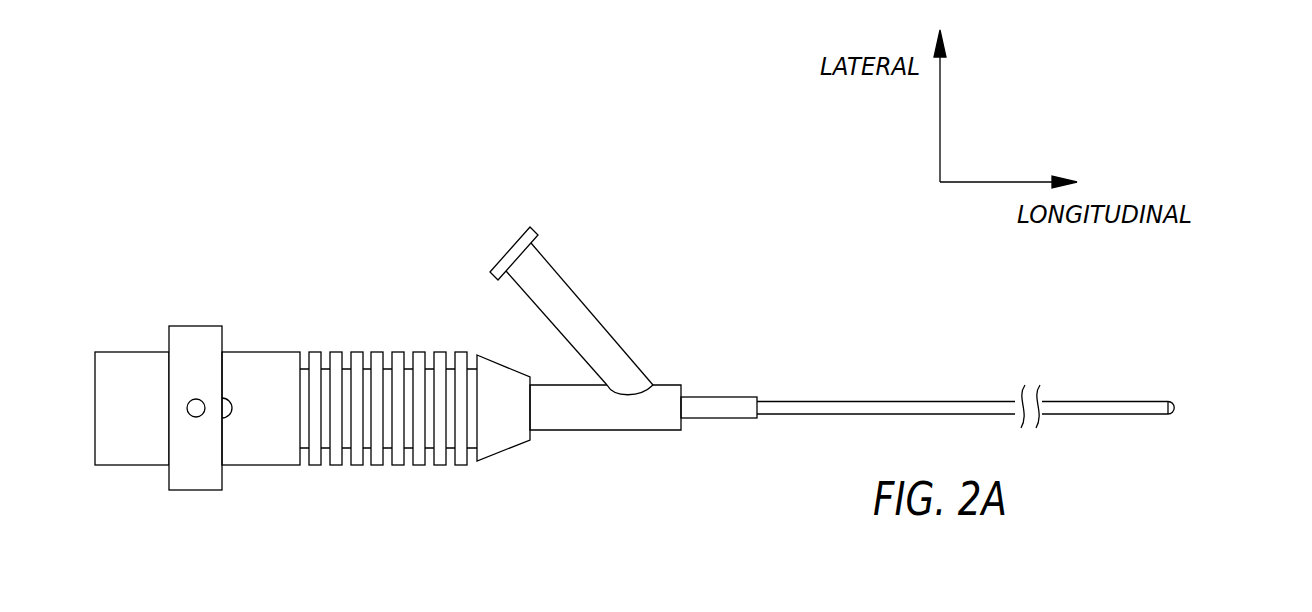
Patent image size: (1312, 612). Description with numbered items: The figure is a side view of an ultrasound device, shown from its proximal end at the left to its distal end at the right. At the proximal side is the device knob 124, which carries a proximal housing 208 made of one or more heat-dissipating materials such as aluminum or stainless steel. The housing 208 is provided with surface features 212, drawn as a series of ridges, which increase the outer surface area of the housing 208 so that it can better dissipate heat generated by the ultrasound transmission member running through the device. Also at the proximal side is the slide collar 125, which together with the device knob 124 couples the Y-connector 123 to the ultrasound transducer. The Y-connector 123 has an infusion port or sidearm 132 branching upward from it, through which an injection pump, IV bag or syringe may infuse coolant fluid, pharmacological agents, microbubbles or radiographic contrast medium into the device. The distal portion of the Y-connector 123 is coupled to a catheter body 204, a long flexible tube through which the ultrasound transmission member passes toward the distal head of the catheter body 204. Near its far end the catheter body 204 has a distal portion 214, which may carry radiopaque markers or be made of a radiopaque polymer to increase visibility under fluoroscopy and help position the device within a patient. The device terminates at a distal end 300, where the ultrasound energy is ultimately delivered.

The device knob 124 is at (340, 255).
The slide collar 125 is at (194, 516).
The proximal housing 208 is at (260, 352).
The surface features 212 is at (387, 357).
The Y-connector 123 is at (640, 467).
The infusion port or sidearm 132 is at (590, 310).
The catheter body 204 is at (902, 401).
The distal portion 214 is at (1151, 377).
The distal end 300 is at (1190, 390).